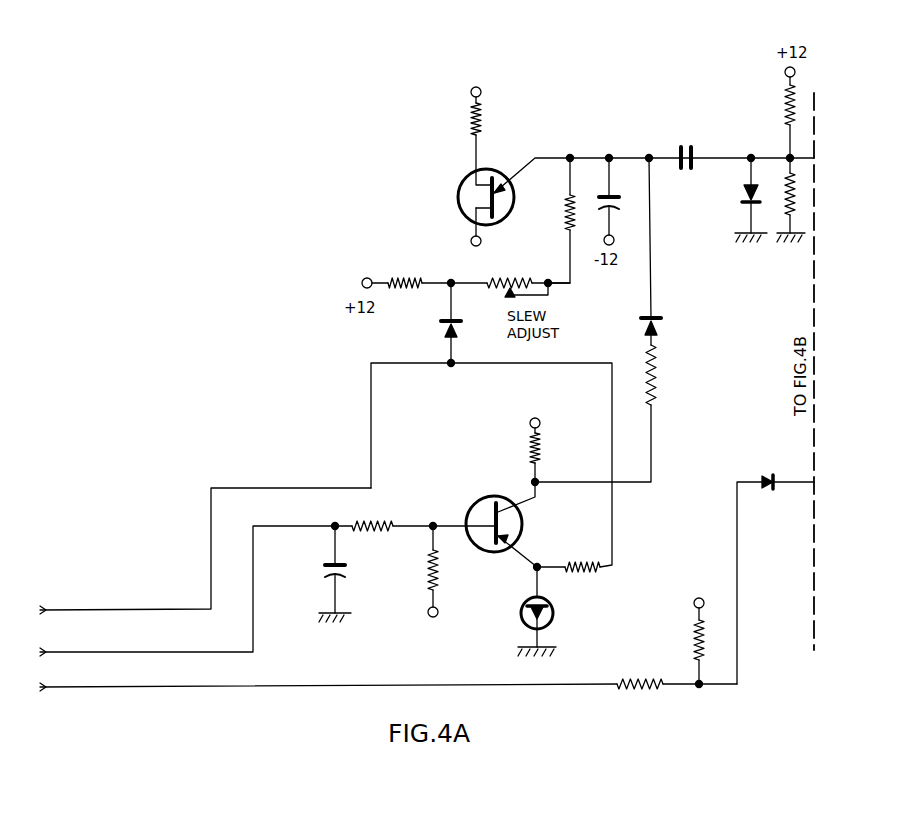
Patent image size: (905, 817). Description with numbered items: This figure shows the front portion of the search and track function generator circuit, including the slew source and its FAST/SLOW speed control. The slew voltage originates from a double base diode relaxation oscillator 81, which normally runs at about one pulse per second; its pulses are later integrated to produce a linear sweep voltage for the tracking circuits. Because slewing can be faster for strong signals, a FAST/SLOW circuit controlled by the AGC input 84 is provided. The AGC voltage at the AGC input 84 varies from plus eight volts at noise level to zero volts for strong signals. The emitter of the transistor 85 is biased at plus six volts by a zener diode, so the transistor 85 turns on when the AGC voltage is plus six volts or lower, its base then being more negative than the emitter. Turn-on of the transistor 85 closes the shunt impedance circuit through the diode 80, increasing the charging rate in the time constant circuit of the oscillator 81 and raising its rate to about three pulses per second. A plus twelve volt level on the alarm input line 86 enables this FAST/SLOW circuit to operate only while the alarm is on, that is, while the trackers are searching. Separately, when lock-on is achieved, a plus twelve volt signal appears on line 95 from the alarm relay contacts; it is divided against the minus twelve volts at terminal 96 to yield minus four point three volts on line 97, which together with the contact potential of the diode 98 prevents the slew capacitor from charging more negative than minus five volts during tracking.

The double base diode relaxation oscillator 81 is at (483, 172).
The diode 80 is at (661, 318).
The transistor 85 is at (484, 493).
The alarm input line 86 is at (186, 607).
The AGC input 84 is at (233, 650).
The line 95 is at (295, 686).
The terminal 96 is at (695, 603).
The line 97 is at (738, 652).
The diode 98 is at (765, 474).